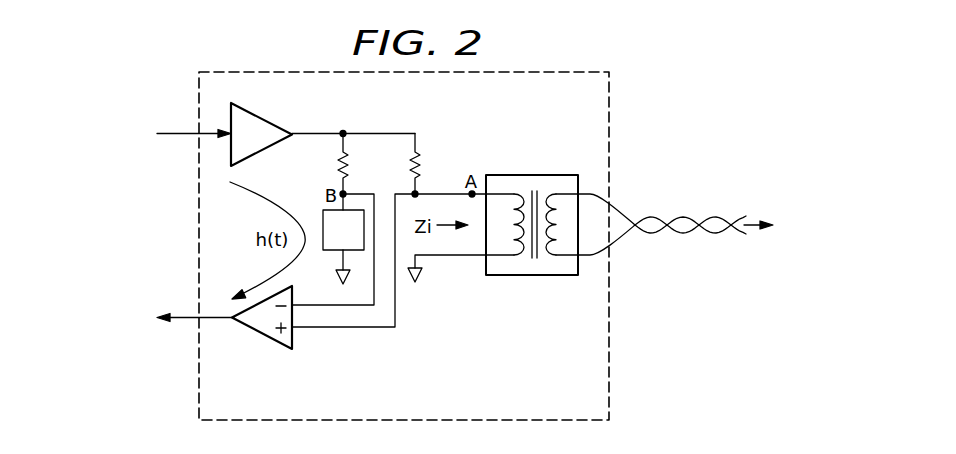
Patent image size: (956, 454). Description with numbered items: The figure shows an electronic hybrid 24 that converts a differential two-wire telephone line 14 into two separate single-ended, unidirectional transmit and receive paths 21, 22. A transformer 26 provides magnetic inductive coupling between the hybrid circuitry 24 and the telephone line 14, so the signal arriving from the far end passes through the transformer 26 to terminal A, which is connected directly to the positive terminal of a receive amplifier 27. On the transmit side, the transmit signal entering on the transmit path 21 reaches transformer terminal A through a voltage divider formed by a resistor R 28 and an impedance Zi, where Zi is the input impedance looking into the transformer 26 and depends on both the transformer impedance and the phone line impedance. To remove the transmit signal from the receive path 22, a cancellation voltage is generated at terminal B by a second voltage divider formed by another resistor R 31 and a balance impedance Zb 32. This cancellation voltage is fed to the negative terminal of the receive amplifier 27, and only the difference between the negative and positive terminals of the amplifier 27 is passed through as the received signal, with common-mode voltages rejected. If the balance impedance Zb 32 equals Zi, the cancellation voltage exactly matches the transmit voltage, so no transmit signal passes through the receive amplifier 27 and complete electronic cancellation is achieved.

The telephone line 14 is at (716, 231).
The transmit path 21 is at (195, 136).
The receive path 22 is at (178, 313).
The electronic hybrid 24 is at (520, 394).
The transformer 26 is at (532, 174).
The receive amplifier 27 is at (252, 329).
The resistor R 28 is at (420, 160).
The resistor R 31 is at (348, 160).
The balance impedance Zb 32 is at (323, 212).